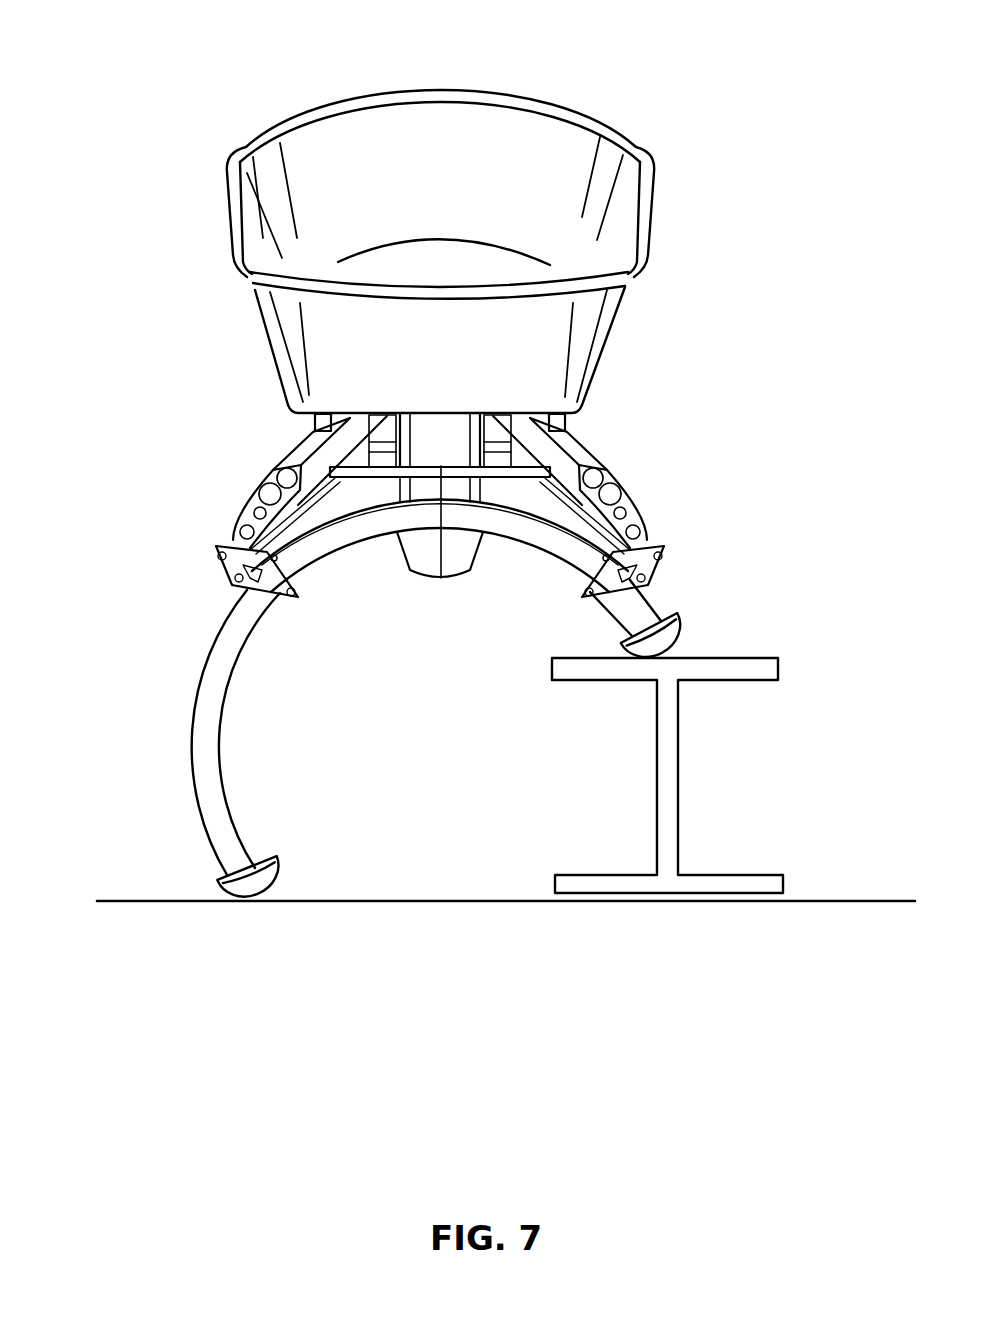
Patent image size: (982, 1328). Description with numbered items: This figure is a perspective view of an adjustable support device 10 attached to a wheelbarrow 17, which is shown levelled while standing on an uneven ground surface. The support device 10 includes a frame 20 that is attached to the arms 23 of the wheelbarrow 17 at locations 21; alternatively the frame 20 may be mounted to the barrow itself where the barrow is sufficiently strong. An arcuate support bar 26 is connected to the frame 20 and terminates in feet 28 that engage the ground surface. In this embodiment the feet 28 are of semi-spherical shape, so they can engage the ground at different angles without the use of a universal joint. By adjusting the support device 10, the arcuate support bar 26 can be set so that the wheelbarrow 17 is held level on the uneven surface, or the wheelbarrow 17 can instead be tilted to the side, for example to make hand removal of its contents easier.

The wheelbarrow 17 is at (673, 100).
The frame 20 is at (441, 582).
The arms 23 is at (290, 453).
The locations 21 is at (327, 487).
The adjustable support device 10 is at (206, 555).
The arcuate support bar 26 is at (200, 720).
The feet 28 is at (272, 880).